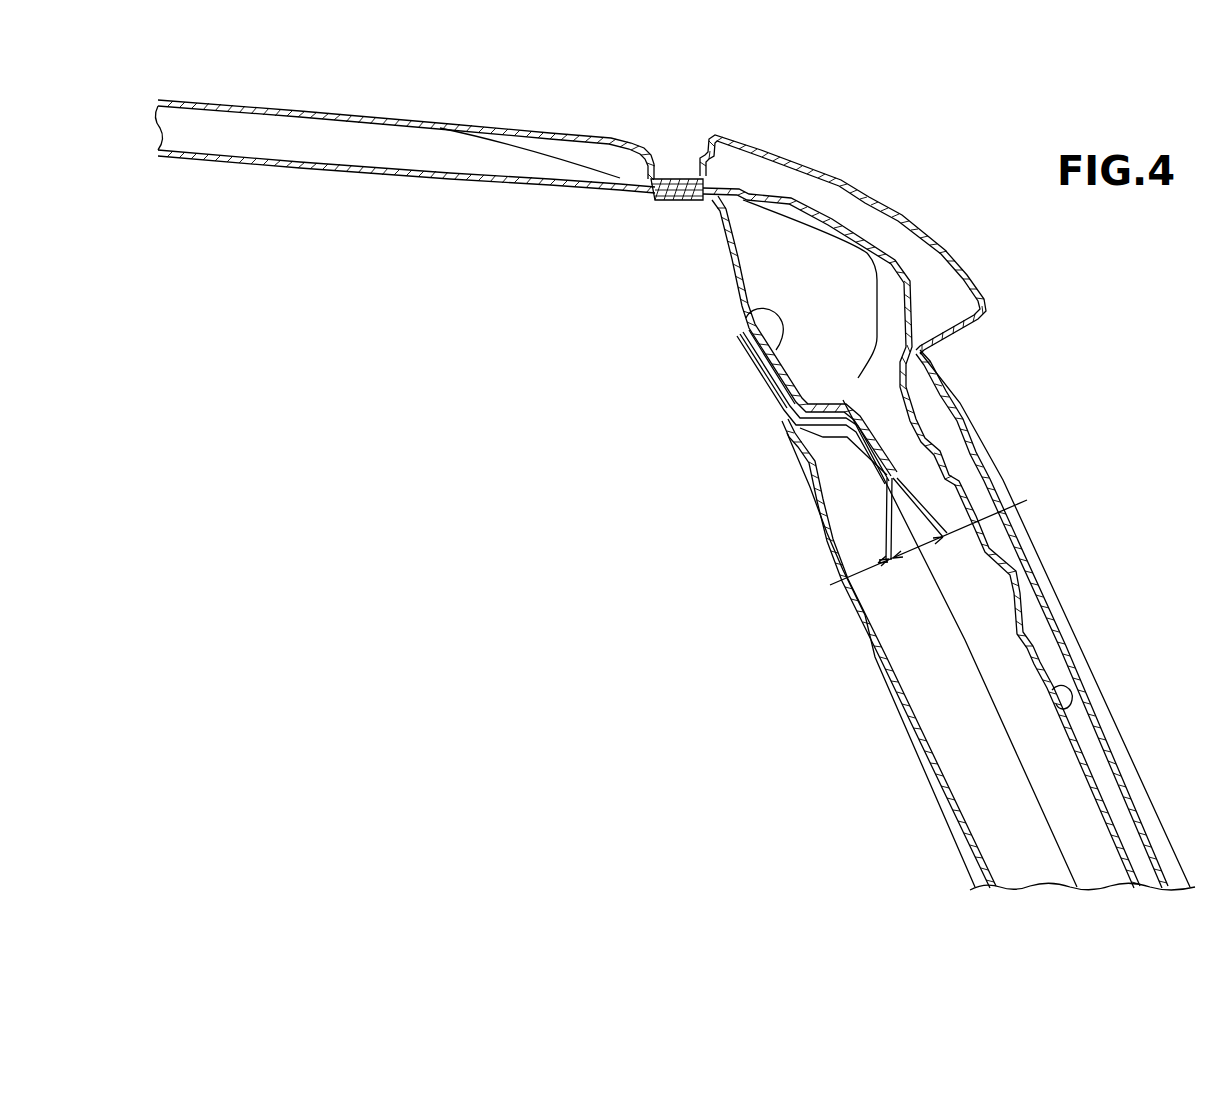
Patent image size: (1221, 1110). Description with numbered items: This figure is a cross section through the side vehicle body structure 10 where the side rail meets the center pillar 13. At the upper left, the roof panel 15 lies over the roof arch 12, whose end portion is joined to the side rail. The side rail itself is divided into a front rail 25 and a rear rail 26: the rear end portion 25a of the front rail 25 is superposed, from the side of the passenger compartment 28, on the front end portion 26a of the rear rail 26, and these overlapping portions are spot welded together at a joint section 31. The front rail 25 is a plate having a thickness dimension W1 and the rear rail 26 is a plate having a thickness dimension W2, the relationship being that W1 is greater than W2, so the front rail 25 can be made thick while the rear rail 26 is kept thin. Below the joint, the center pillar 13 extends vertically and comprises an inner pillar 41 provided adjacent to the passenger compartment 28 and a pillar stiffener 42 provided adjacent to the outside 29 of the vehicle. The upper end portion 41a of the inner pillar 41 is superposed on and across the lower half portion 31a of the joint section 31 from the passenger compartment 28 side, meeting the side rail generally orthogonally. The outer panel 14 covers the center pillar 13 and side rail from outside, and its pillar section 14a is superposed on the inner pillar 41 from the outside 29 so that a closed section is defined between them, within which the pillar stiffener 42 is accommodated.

The side vehicle body structure 10 is at (848, 126).
The roof arch 12 is at (312, 165).
The center pillar 13 is at (920, 644).
The outer panel 14 is at (986, 408).
The pillar section 14a is at (1066, 607).
The roof panel 15 is at (413, 113).
The front rail 25 is at (747, 336).
The rear end portion 25a is at (727, 252).
The rear rail 26 is at (753, 394).
The front end portion 26a is at (742, 318).
The passenger compartment 28 is at (420, 518).
The outside 29 is at (1212, 457).
The joint section 31 is at (721, 292).
The lower half portion 31a is at (767, 377).
The inner pillar 41 is at (890, 677).
The upper end portion 41a is at (760, 372).
The pillar stiffener 42 is at (1063, 711).
The thickness dimension W1 is at (908, 540).
The thickness dimension W2 is at (981, 518).